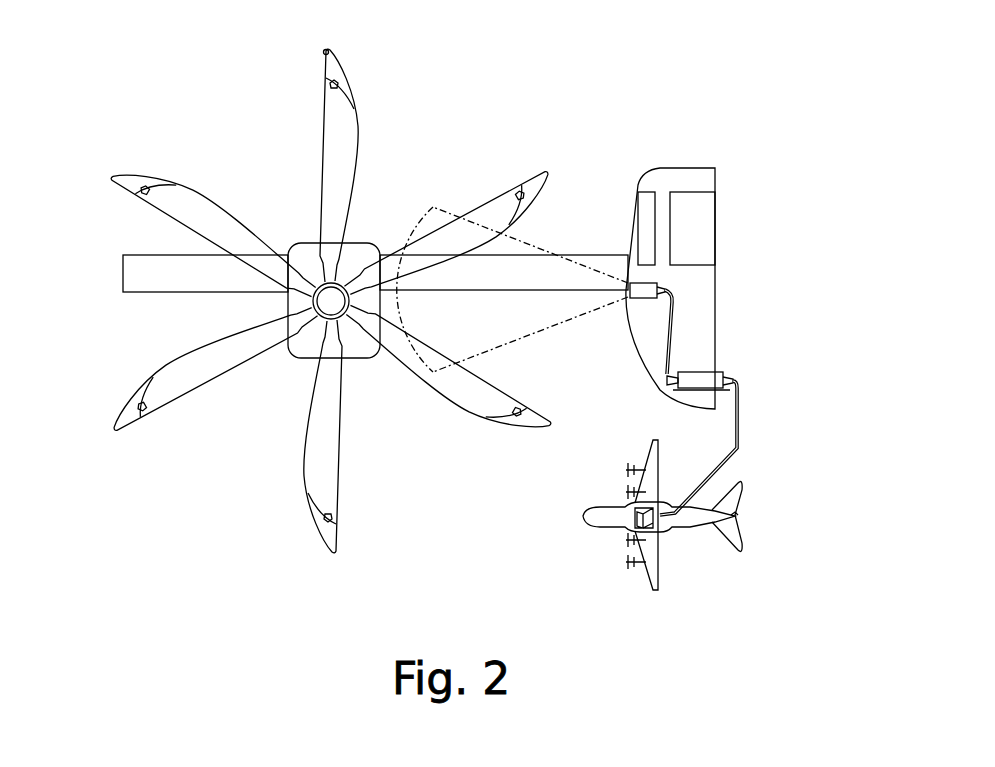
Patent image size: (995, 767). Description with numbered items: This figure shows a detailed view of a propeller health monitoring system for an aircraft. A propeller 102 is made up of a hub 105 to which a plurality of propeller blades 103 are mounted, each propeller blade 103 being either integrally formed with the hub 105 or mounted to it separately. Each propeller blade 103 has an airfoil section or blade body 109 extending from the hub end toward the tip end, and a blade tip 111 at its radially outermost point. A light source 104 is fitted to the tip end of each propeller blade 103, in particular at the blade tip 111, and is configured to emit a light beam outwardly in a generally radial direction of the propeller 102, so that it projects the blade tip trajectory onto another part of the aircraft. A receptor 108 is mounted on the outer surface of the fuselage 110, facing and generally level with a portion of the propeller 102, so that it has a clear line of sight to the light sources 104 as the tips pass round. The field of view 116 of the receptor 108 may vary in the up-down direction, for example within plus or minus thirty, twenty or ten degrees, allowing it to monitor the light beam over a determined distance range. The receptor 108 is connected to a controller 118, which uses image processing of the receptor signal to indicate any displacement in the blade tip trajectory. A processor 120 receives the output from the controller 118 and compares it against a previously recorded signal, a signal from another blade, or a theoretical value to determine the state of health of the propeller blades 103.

The propeller 102 is at (167, 497).
The propeller blade 103 is at (208, 198).
The light source 104 is at (328, 50).
The hub 105 is at (327, 303).
The receptor 108 is at (628, 292).
The blade body 109 is at (340, 150).
The fuselage 110 is at (658, 168).
The blade tip 111 is at (327, 73).
The field of view 116 is at (540, 247).
The controller 118 is at (715, 380).
The processor 120 is at (630, 530).